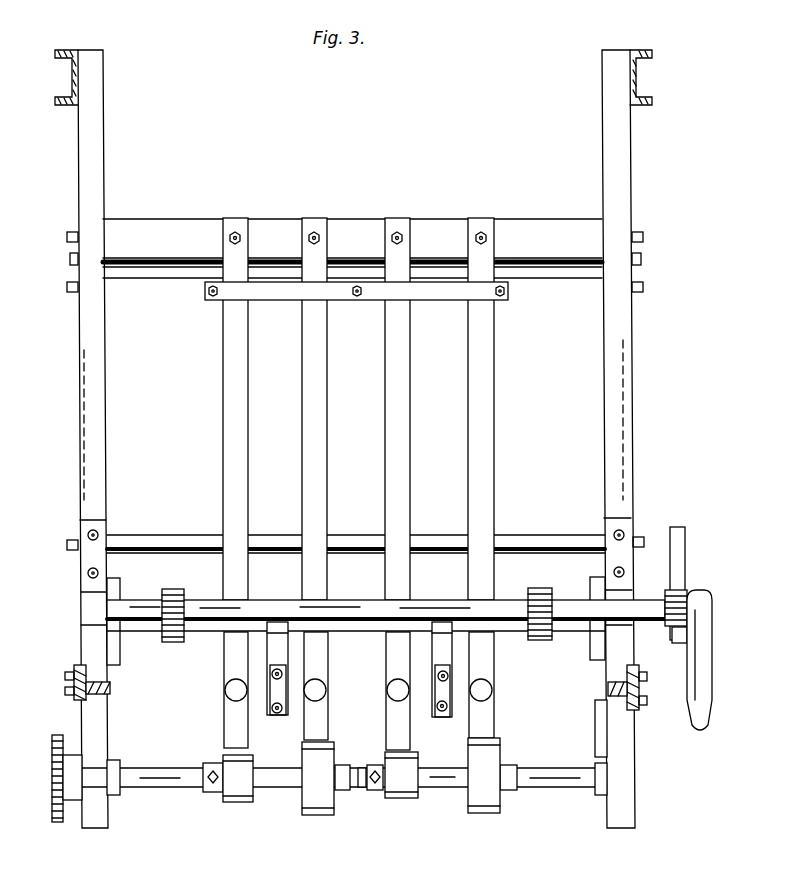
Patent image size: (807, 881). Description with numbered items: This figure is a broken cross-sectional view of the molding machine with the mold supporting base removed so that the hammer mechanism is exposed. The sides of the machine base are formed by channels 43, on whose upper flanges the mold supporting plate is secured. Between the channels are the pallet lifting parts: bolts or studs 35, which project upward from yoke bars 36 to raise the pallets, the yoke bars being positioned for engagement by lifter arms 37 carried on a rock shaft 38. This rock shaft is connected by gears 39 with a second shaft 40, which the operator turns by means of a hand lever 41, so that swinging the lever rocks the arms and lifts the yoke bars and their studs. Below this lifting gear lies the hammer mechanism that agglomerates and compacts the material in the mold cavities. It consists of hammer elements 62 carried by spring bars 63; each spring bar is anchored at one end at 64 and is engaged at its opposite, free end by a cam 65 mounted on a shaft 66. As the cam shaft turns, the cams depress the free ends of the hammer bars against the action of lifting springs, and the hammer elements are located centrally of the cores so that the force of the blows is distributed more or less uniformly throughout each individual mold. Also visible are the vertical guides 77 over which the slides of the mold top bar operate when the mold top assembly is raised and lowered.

The bolts or studs 35 is at (272, 681).
The yoke bars 36 is at (281, 713).
The lifter arms 37 is at (432, 650).
The rock shaft 38 is at (510, 632).
The gears 39 is at (176, 643).
The shaft 40 is at (452, 596).
The hand lever 41 is at (708, 683).
The channels 43 is at (84, 401).
The hammer elements 62 is at (398, 690).
The spring bars 63 is at (385, 492).
The anchor 64 is at (521, 297).
The cam 65 is at (302, 805).
The shaft 66 is at (177, 780).
The vertical guides 77 is at (122, 693).